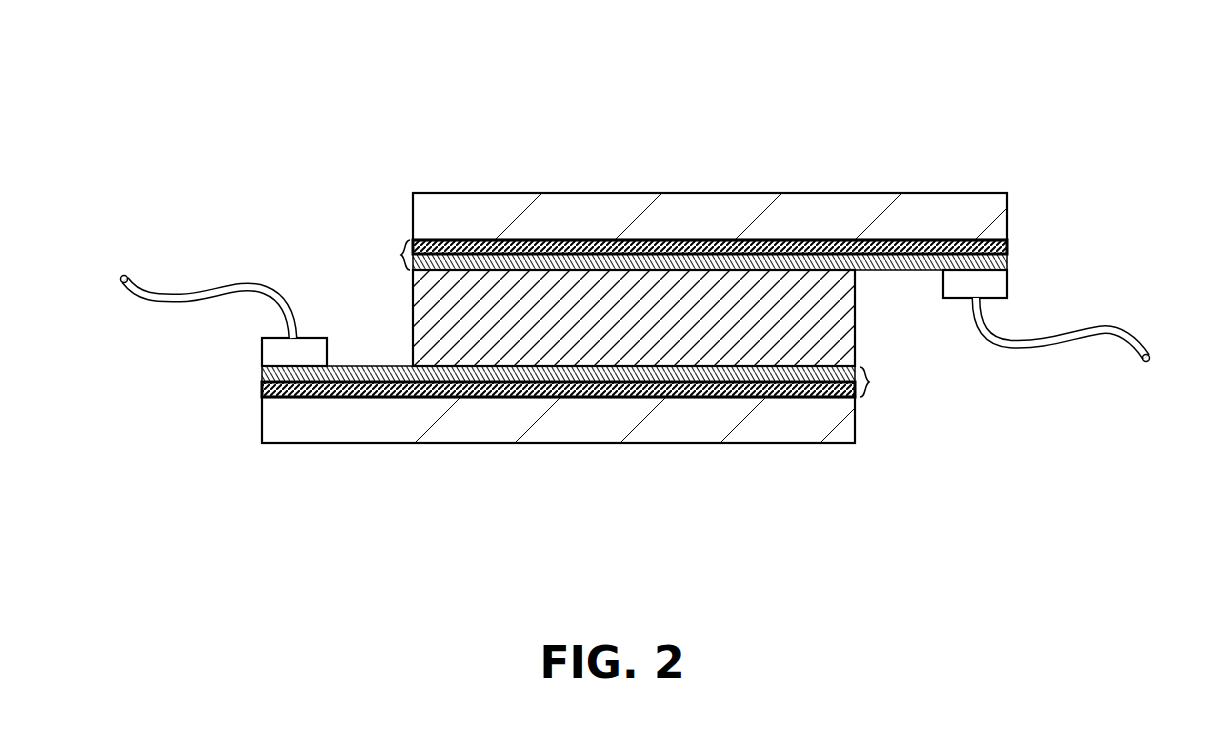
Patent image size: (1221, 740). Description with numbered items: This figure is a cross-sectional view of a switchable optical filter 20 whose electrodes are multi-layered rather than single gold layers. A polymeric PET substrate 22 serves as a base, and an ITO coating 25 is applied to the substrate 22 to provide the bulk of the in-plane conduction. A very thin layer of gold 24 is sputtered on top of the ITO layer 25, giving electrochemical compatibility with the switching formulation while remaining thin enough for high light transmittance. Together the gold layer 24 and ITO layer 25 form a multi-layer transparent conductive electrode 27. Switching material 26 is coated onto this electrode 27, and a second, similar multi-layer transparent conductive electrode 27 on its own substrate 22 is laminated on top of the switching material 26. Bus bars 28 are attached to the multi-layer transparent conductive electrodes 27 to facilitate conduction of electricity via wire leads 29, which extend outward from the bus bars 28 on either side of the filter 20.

The switchable optical filter 20 is at (946, 104).
The substrate 22 is at (678, 192).
The gold layer 24 is at (1007, 262).
The ITO layer 25 is at (1007, 247).
The switching material 26 is at (413, 312).
The multi-layer transparent conductive electrode 27 is at (398, 252).
The bus bar 28 is at (1007, 283).
The wire lead 29 is at (145, 295).